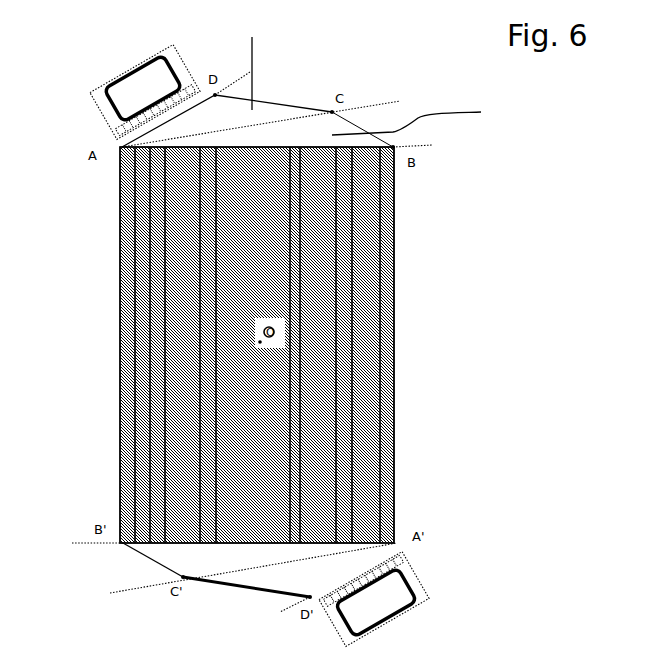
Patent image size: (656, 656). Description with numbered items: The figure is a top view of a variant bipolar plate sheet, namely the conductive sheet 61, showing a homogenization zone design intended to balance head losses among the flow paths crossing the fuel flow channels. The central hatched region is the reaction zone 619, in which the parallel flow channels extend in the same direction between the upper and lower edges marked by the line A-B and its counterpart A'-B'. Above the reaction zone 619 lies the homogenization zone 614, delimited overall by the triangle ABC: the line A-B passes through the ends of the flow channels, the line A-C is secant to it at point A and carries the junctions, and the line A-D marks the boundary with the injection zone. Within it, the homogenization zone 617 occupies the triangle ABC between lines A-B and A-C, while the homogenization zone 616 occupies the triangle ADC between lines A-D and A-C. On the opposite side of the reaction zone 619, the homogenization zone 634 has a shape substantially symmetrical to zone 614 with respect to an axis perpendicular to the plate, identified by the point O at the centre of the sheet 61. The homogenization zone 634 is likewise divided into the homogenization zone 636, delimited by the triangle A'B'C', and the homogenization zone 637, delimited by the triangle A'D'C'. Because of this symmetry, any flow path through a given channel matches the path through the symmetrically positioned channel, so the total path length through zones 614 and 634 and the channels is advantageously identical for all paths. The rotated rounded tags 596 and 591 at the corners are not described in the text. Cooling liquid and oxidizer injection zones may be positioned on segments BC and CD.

The conductive sheet 61 is at (84, 310).
The reaction zone 619 is at (113, 415).
The first identification tag 596 is at (145, 92).
The second identification tag 591 is at (374, 599).
The homogenization zone 614 is at (298, 93).
The homogenization zone 616 is at (252, 60).
The homogenization zone 617 is at (429, 117).
The homogenization zone 634 is at (207, 588).
The homogenization zone 636 is at (260, 578).
The homogenization zone 637 is at (152, 555).